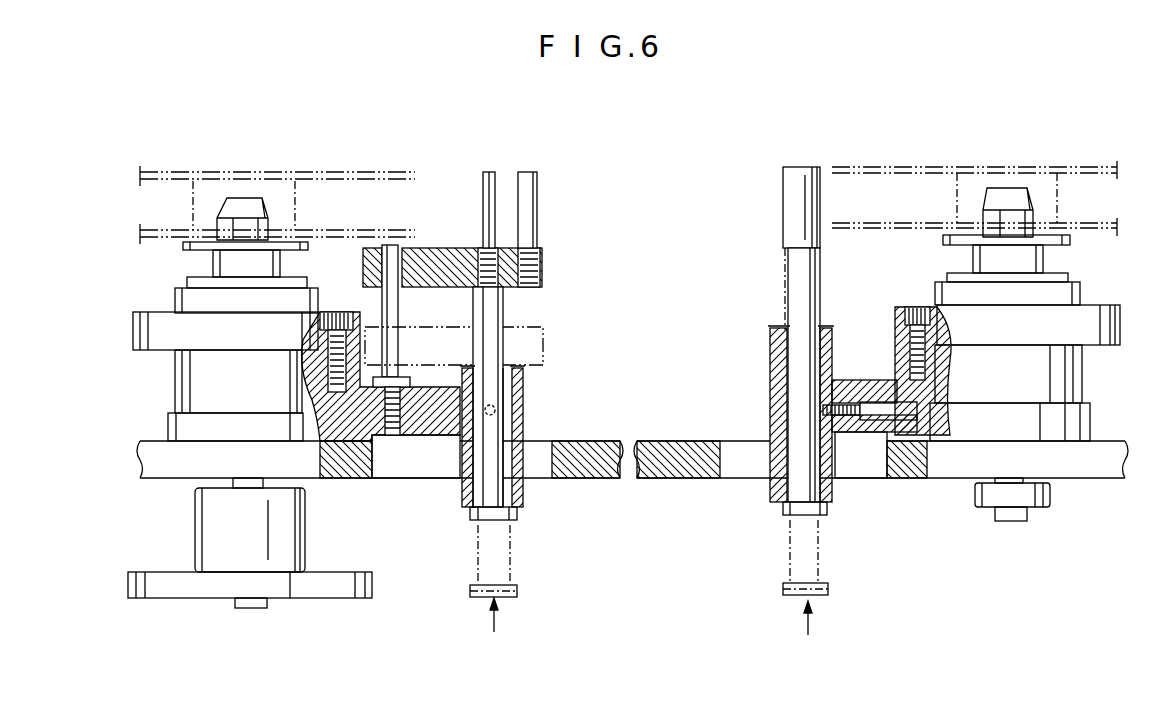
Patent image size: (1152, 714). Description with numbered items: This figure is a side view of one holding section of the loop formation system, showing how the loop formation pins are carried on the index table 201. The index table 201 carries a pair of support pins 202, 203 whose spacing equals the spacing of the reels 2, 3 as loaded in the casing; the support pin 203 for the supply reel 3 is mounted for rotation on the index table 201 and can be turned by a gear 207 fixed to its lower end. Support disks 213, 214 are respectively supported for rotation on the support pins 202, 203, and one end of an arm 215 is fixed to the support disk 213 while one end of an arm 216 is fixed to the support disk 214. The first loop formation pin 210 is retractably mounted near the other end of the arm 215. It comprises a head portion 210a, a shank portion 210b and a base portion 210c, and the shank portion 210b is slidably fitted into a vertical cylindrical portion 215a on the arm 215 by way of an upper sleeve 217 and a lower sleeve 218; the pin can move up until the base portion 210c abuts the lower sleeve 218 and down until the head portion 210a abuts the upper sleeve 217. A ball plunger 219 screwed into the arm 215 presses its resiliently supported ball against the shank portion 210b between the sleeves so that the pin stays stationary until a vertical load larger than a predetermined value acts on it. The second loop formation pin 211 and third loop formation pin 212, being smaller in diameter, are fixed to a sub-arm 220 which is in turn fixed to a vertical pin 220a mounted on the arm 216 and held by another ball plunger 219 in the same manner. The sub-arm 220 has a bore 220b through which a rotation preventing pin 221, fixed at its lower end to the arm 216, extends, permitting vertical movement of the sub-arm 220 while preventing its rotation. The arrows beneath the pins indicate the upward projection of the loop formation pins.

The reel 2 is at (858, 166).
The supply reel 3 is at (387, 170).
The index table 201 is at (689, 440).
The support pin 202 is at (1008, 194).
The support pin 203 is at (248, 197).
The gear 207 is at (354, 572).
The first loop formation pin 210 is at (765, 385).
The head portion 210a is at (789, 220).
The shank portion 210b is at (789, 297).
The base portion 210c is at (787, 511).
The second loop formation pin 211 is at (541, 190).
The third loop formation pin 212 is at (495, 185).
The support disk 213 is at (1102, 308).
The support disk 214 is at (160, 320).
The arm 215 is at (856, 384).
The vertical cylindrical portion 215a is at (841, 338).
The arm 216 is at (412, 386).
The upper sleeve 217 is at (840, 320).
The lower sleeve 218 is at (834, 510).
The ball plunger 219 is at (528, 411).
The sub-arm 220 is at (466, 248).
The vertical pin 220a is at (490, 346).
The bore 220b is at (400, 248).
The rotation preventing pin 221 is at (398, 299).